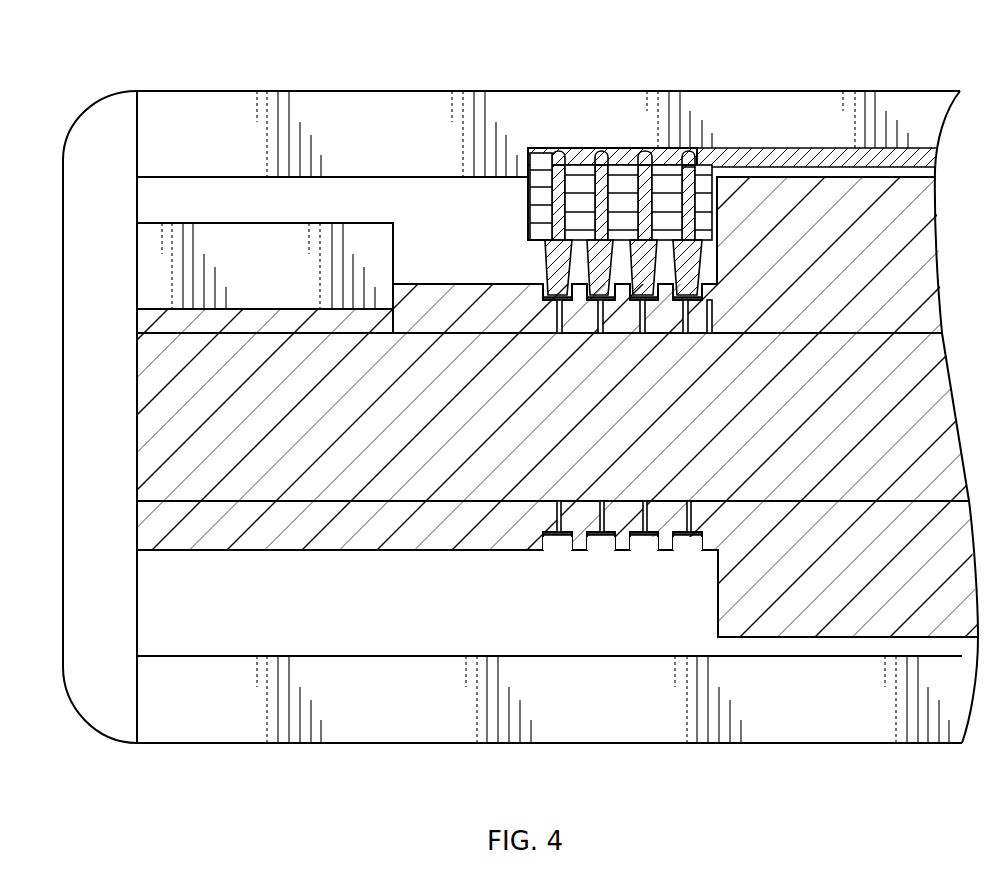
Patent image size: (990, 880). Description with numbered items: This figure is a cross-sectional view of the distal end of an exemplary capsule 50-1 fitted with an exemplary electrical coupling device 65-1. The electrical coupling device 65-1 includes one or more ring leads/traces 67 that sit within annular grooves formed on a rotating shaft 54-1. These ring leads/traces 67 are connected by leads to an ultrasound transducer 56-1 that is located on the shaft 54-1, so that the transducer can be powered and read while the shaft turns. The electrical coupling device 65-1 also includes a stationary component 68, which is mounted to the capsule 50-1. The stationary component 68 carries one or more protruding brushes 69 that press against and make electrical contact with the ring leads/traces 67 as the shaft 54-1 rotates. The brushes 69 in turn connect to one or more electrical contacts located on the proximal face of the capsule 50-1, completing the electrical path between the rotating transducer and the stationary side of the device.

The capsule 50-1 is at (361, 100).
The ultrasound transducer 56-1 is at (264, 244).
The electrical coupling device 65-1 is at (727, 78).
The stationary component 68 is at (542, 162).
The brushes 69 is at (548, 268).
The ring leads/traces 67 is at (690, 530).
The rotating shaft 54-1 is at (308, 527).